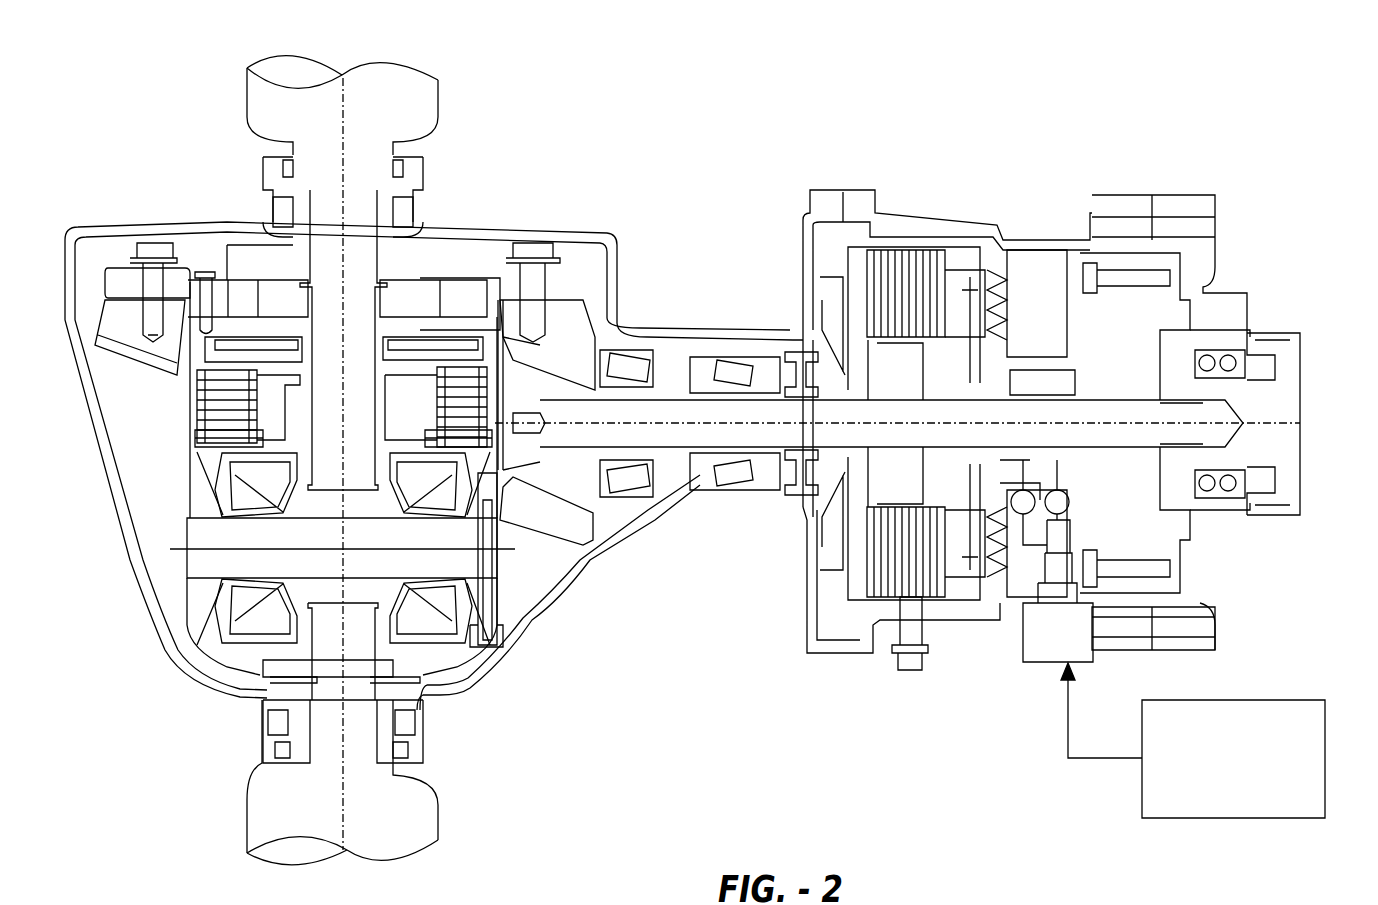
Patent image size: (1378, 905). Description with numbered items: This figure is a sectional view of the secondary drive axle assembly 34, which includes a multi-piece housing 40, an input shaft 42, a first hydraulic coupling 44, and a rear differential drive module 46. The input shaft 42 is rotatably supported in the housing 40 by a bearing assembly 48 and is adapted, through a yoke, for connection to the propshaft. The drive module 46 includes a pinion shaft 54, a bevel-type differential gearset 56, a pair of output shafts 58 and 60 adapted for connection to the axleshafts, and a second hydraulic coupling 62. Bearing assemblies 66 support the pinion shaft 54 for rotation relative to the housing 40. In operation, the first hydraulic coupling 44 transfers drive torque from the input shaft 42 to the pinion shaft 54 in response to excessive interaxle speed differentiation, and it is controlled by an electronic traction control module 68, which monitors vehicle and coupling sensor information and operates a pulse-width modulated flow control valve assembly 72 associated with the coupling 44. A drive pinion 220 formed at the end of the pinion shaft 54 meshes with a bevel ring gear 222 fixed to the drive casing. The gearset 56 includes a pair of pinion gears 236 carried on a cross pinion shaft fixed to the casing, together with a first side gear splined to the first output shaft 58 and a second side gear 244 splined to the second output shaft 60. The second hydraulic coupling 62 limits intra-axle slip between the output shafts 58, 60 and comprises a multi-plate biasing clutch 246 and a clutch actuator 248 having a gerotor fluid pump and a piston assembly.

The drive axle assembly 34 is at (985, 112).
The multi-piece housing 40 is at (622, 232).
The input shaft 42 is at (1288, 407).
The first hydraulic coupling 44 is at (848, 242).
The rear differential drive module 46 is at (590, 303).
The bearing assembly 48 is at (1223, 487).
The pinion shaft 54 is at (680, 440).
The bevel-type differential gearset 56 is at (447, 657).
The first output shaft 58 is at (427, 103).
The second output shaft 60 is at (428, 823).
The second hydraulic coupling 62 is at (209, 481).
The bearing assemblies 66 is at (630, 357).
The electronic traction control module 68 is at (1298, 715).
The pulse-width modulated flow control valve assembly 72 is at (1040, 637).
The drive pinion 220 is at (552, 473).
The bevel ring gear 222 is at (140, 347).
The pinion gears 236 is at (242, 510).
The second side gear 244 is at (287, 642).
The biasing clutch 246 is at (216, 412).
The clutch actuator 248 is at (447, 287).